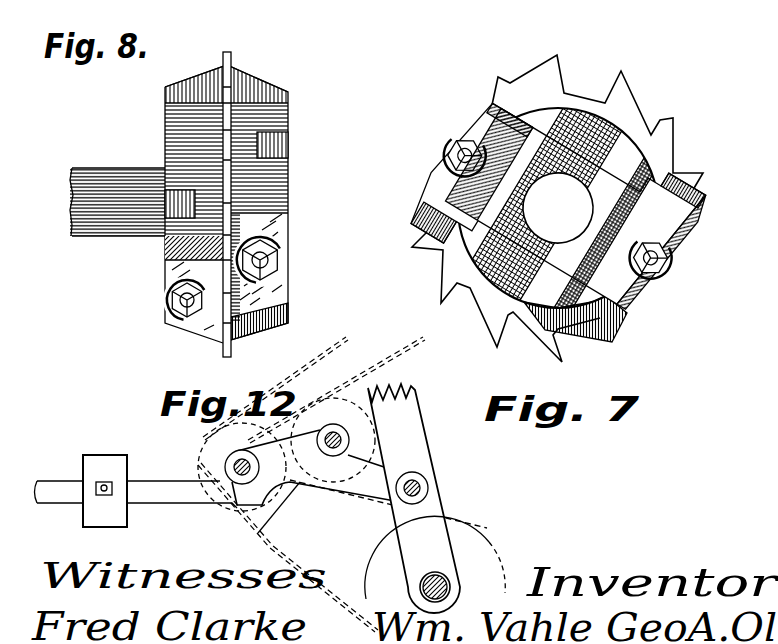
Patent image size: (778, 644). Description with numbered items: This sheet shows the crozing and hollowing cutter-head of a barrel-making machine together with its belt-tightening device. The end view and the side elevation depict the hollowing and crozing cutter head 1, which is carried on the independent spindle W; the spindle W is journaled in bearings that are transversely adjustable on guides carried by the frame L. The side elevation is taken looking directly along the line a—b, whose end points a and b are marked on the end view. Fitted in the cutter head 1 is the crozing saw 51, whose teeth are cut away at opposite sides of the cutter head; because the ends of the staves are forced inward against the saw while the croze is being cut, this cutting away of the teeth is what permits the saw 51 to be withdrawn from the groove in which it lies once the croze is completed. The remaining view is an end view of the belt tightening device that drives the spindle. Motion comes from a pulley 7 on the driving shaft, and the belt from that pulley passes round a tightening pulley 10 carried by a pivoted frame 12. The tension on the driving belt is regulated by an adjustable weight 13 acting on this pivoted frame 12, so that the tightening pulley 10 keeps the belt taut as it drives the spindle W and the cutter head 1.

In FIG. 8, the crozing saw 51 is at (227, 90).
In FIG. 7, the crozing saw 51 is at (533, 91).
In FIG. 8, the hollowing and crozing cutter head 1 is at (172, 153).
In FIG. 7, the hollowing and crozing cutter head 1 is at (561, 207).
In FIG. 12, the hollowing and crozing cutter head 1 is at (205, 482).
In FIG. 8, the spindle W is at (121, 238).
In FIG. 7, the spindle W is at (558, 208).
In FIG. 7, the line a— b is at (640, 106).
In FIG. 7, the line a—b a is at (481, 314).
In FIG. 12, the tightening pulley 10 is at (214, 442).
In FIG. 12, the adjustable weight 13 is at (105, 503).
In FIG. 12, the pivoted frame 12 is at (274, 520).
In FIG. 12, the frame L is at (402, 448).
In FIG. 12, the pulley 7 is at (480, 547).